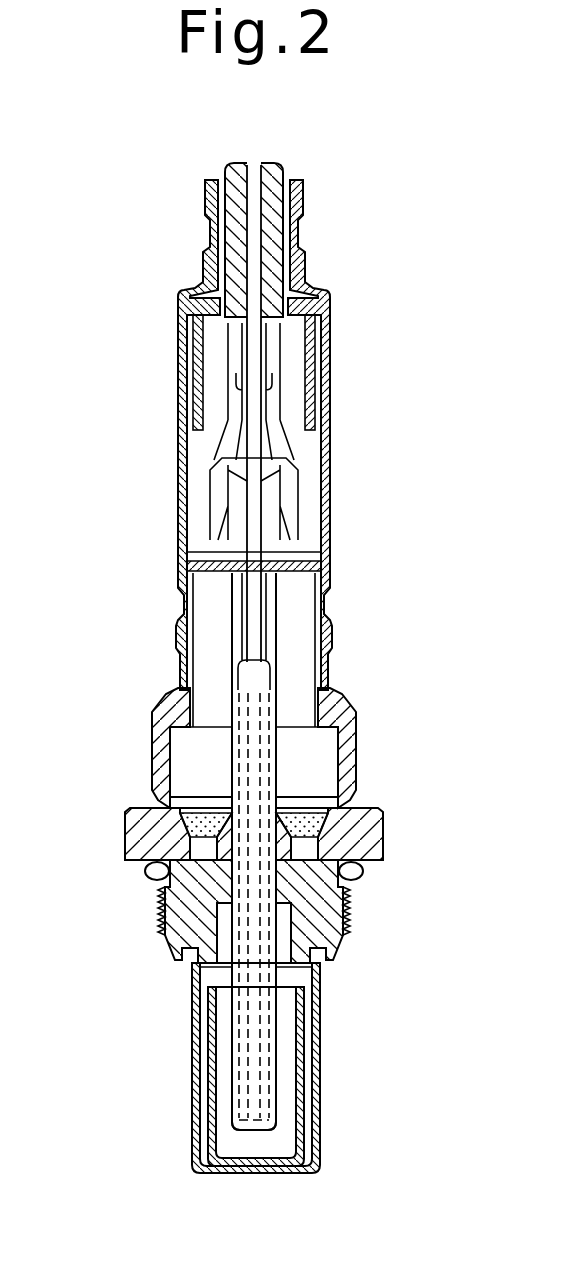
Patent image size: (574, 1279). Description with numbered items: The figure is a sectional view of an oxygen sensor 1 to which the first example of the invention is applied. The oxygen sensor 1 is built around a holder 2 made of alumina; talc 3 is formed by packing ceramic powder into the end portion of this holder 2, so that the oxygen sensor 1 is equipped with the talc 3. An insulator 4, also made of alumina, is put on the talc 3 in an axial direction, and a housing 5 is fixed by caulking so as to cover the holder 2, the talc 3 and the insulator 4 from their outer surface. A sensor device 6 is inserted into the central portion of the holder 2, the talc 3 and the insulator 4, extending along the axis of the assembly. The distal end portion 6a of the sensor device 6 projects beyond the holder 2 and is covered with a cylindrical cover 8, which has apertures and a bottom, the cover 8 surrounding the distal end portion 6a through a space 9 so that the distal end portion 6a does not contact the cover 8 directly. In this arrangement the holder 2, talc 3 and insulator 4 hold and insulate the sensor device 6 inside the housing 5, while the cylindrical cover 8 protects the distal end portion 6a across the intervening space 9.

The oxygen sensor 1 is at (336, 484).
The holder 2 is at (202, 858).
The talc 3 is at (161, 800).
The insulator 4 is at (193, 754).
The housing 5 is at (322, 928).
The sensor device 6 is at (262, 855).
The distal end portion 6a is at (267, 1127).
The cylindrical cover 8 is at (197, 1086).
The space 9 is at (225, 1103).